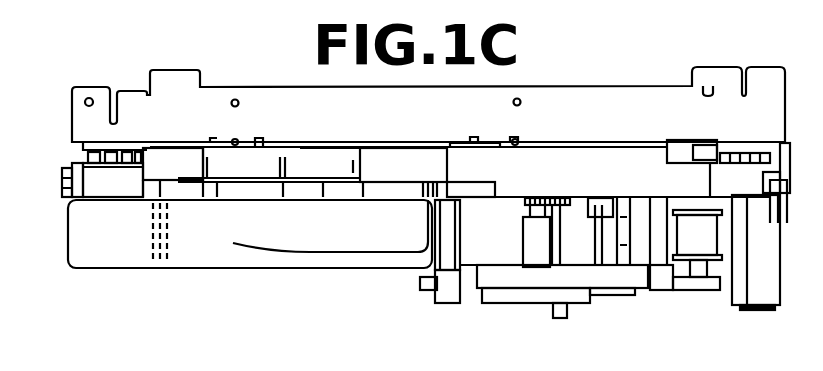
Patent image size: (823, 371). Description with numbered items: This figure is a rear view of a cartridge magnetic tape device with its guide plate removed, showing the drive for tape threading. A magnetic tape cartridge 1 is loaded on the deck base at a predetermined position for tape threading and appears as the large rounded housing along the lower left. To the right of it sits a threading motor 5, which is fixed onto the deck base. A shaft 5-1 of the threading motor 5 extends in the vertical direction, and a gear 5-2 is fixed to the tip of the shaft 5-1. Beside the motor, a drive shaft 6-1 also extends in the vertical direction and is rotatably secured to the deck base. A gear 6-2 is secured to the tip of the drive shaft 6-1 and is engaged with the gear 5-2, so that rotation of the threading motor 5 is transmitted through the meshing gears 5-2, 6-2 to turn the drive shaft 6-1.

The magnetic tape cartridge 1 is at (215, 248).
The threading motor 5 is at (527, 267).
The shaft of the threading motor 5-1 is at (533, 207).
The gear 5-2 is at (530, 198).
The drive shaft 6-1 is at (561, 241).
The gear 6-2 is at (568, 197).